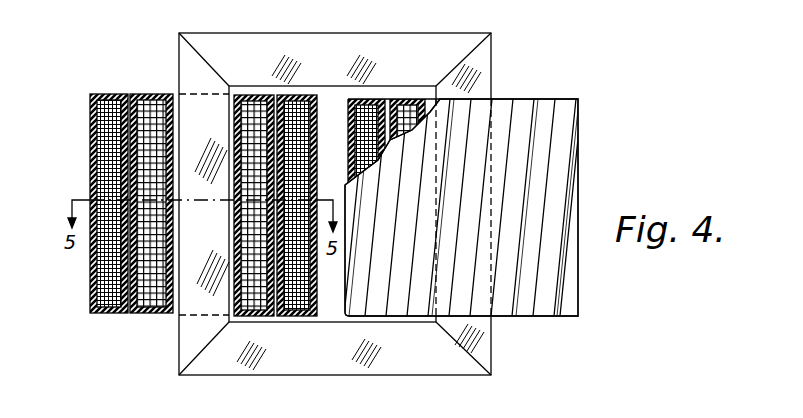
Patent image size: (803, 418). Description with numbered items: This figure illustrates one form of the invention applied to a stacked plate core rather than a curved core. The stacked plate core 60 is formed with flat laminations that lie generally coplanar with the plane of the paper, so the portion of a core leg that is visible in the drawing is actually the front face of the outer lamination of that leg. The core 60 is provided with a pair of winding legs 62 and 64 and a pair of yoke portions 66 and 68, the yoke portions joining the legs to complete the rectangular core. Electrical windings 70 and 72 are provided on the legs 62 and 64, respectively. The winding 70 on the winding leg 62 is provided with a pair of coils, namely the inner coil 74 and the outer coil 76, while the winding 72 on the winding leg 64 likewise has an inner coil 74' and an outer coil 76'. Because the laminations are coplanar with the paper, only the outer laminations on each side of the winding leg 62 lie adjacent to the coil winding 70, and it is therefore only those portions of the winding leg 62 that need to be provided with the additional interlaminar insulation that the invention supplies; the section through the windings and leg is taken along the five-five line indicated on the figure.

The stacked plate core 60 is at (432, 52).
The winding leg 62 is at (196, 336).
The winding leg 64 is at (485, 352).
The yoke portion 66 is at (318, 50).
The yoke portion 68 is at (345, 355).
The electrical winding 70 is at (95, 168).
The electrical winding 72 is at (538, 99).
The inner coil 74 is at (151, 168).
The inner coil 74' is at (465, 180).
The outer coil 76 is at (95, 173).
The outer coil 76' is at (395, 160).